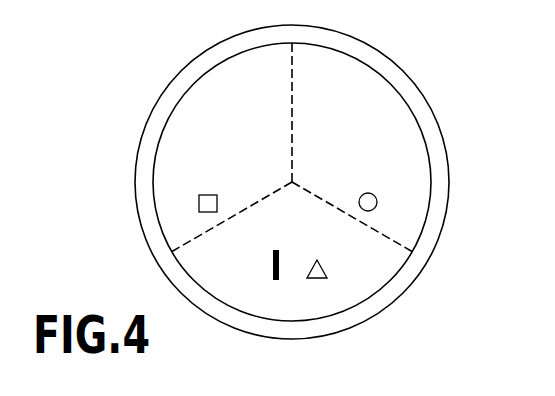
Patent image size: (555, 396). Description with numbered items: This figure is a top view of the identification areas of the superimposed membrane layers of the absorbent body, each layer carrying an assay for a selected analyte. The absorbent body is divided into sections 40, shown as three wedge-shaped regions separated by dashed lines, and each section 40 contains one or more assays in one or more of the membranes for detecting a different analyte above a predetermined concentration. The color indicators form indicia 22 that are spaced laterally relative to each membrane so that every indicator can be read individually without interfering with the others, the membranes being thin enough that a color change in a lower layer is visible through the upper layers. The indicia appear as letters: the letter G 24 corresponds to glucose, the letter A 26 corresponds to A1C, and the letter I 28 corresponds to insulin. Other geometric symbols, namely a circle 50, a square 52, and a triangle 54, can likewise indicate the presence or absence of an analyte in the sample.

The indicia 22 is at (410, 203).
The letter G 24 is at (386, 155).
The letter A 26 is at (192, 160).
The letter I 28 is at (276, 285).
The sections 40 is at (218, 87).
The circle 50 is at (378, 200).
The square 52 is at (192, 205).
The triangle 54 is at (330, 283).